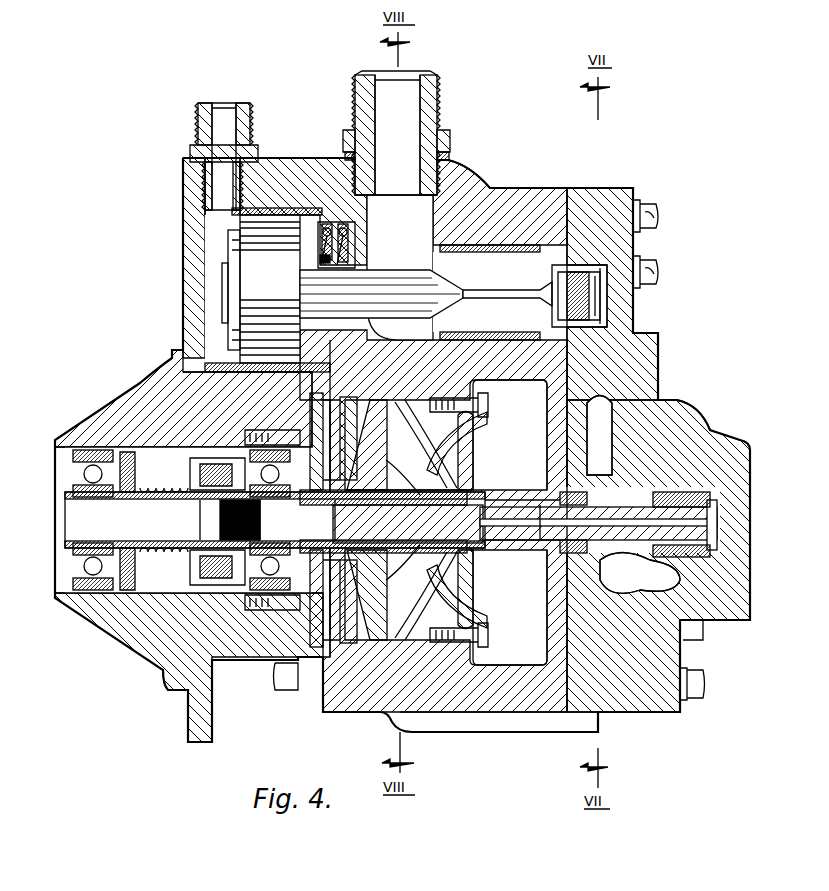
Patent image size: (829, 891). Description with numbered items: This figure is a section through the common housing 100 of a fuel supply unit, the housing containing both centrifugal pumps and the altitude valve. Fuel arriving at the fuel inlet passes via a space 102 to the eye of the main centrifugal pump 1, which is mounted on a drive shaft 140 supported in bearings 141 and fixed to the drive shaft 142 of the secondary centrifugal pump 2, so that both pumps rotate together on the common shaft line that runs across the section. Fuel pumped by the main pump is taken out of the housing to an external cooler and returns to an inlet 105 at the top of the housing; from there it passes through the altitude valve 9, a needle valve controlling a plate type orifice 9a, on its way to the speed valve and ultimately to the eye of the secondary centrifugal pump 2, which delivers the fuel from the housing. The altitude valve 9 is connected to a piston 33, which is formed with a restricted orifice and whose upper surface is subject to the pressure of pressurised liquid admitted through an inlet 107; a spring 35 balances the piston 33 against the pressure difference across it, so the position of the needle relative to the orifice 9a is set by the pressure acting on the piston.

The main centrifugal pump 1 is at (388, 442).
The secondary centrifugal pump 2 is at (600, 472).
The altitude valve 9 is at (392, 270).
The plate type orifice 9a is at (462, 312).
The piston 33 is at (280, 273).
The spring 35 is at (345, 228).
The common housing 100 is at (357, 702).
The space 102 is at (535, 615).
The inlet 105 is at (376, 80).
The inlet 107 is at (238, 118).
The drive shaft 140 is at (136, 546).
The bearings 141 is at (282, 542).
The drive shaft 142 is at (535, 495).